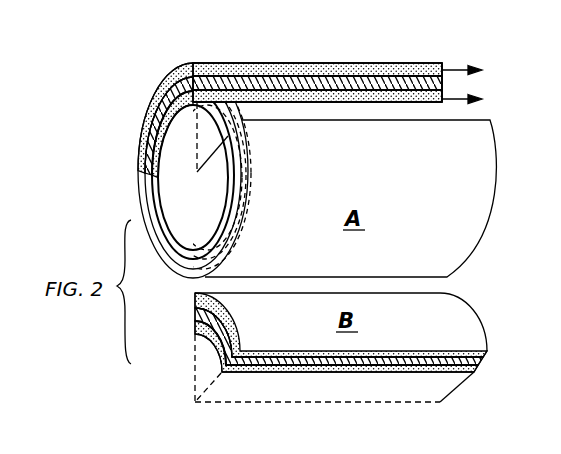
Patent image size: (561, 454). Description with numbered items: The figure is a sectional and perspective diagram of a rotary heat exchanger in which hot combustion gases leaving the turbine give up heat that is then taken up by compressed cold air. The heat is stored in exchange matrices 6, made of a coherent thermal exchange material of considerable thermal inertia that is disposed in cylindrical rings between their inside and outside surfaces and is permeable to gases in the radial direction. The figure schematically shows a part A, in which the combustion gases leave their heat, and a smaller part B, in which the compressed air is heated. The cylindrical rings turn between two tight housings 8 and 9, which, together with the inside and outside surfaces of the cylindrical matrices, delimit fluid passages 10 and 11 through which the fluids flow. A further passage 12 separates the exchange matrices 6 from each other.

The exchange matrices 6 is at (167, 79).
The tight housing 8 is at (406, 64).
The tight housing 9 is at (402, 104).
The fluid passage 10 is at (331, 72).
The fluid passage 11 is at (353, 104).
The passage 12 is at (168, 87).